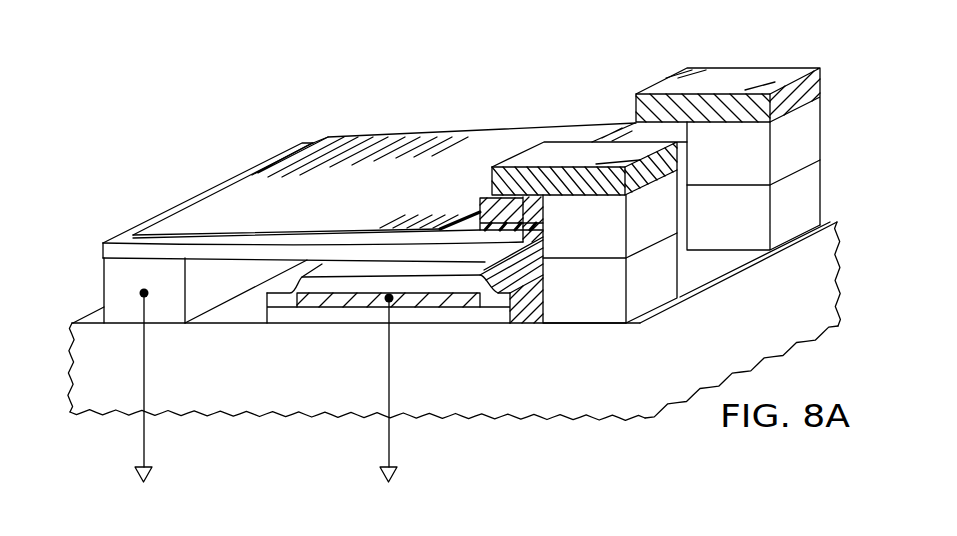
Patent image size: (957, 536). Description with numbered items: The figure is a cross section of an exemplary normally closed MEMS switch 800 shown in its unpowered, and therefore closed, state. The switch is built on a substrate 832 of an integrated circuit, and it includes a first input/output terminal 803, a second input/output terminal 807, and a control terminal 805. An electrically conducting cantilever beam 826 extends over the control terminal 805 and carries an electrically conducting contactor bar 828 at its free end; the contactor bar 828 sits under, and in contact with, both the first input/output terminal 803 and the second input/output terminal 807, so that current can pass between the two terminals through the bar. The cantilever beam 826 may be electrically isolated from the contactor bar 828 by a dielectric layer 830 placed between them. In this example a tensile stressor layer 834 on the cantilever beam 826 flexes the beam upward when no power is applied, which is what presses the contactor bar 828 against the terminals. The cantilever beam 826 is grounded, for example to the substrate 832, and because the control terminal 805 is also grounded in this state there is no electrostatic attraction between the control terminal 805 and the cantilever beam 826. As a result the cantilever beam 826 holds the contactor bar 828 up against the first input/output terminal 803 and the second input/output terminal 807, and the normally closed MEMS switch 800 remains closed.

The normally closed MEMS switch 800 is at (314, 76).
The first input/output terminal 803 is at (813, 85).
The control terminal 805 is at (322, 300).
The second input/output terminal 807 is at (498, 175).
The cantilever beam 826 is at (103, 253).
The contactor bar 828 is at (488, 203).
The dielectric layer 830 is at (541, 217).
The substrate 832 is at (536, 382).
The tensile stressor layer 834 is at (483, 143).